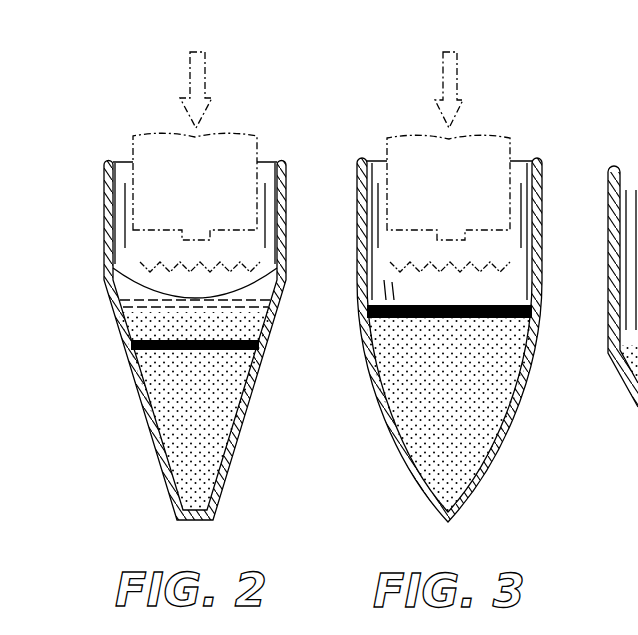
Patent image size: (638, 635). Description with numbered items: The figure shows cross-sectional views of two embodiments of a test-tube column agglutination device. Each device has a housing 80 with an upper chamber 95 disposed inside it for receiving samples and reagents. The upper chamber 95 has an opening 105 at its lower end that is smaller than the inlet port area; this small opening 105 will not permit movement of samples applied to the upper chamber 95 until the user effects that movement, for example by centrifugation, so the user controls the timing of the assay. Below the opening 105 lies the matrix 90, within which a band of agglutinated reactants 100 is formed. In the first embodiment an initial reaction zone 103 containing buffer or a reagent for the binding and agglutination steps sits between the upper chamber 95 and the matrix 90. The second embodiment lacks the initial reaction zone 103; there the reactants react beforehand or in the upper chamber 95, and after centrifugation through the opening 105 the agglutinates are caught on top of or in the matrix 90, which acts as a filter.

In FIG. 2, the housing 80 is at (150, 419).
In FIG. 3, the housing 80 is at (505, 437).
In FIG. 2, the matrix 90 is at (208, 410).
In FIG. 3, the matrix 90 is at (475, 370).
In FIG. 2, the upper chamber 95 is at (253, 136).
In FIG. 3, the upper chamber 95 is at (518, 153).
In FIG. 2, the band of agglutinated reactants 100 is at (252, 347).
In FIG. 3, the band of agglutinated reactants 100 is at (502, 305).
In FIG. 2, the initial reaction zone 103 is at (130, 300).
In FIG. 2, the opening 105 is at (180, 227).
In FIG. 3, the opening 105 is at (463, 232).